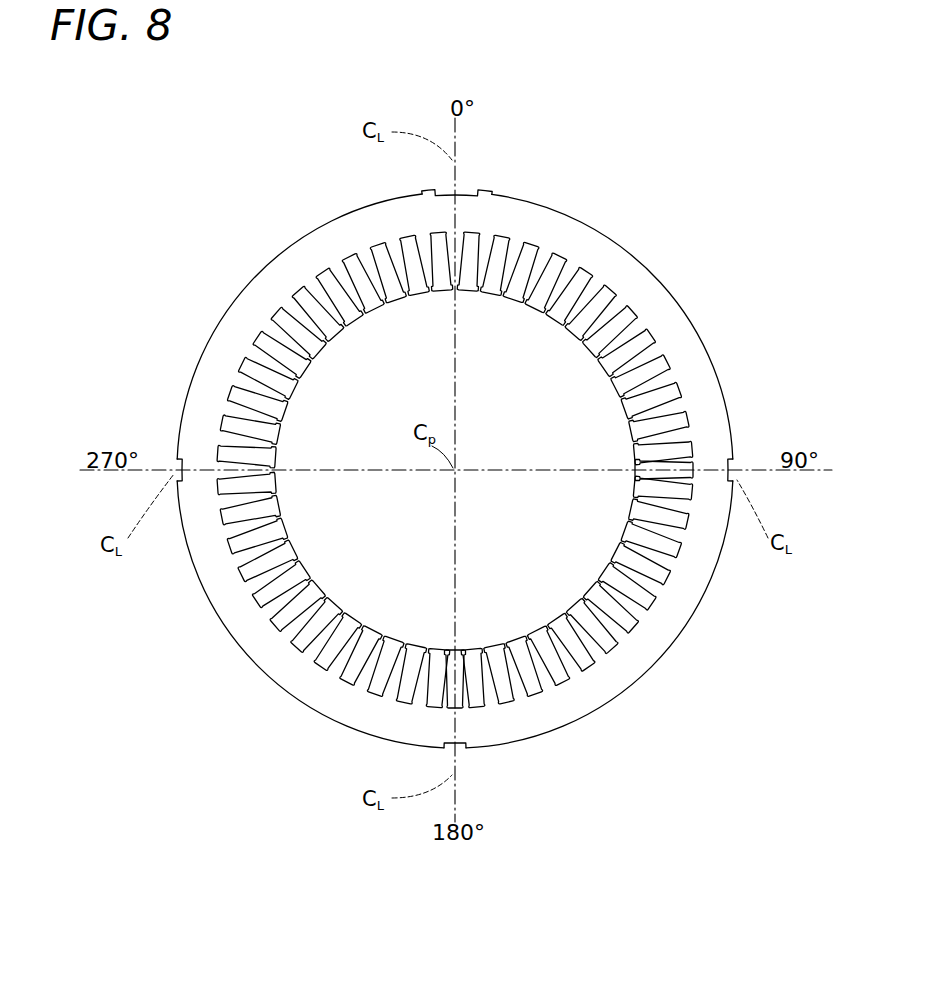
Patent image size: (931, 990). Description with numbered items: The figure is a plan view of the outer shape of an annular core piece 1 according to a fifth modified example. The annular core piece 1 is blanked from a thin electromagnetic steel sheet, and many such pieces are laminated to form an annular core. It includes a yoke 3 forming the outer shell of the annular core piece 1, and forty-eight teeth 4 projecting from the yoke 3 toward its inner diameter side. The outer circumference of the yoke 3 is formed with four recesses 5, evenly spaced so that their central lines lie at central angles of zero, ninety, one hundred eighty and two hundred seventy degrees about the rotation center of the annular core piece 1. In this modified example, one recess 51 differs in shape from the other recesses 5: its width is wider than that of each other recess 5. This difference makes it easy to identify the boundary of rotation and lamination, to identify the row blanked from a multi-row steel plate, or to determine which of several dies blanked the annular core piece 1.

The annular core piece 1 is at (609, 187).
The yoke 3 is at (636, 268).
The teeth 4 is at (632, 421).
The recesses 5 is at (737, 462).
The recess 51 is at (462, 192).